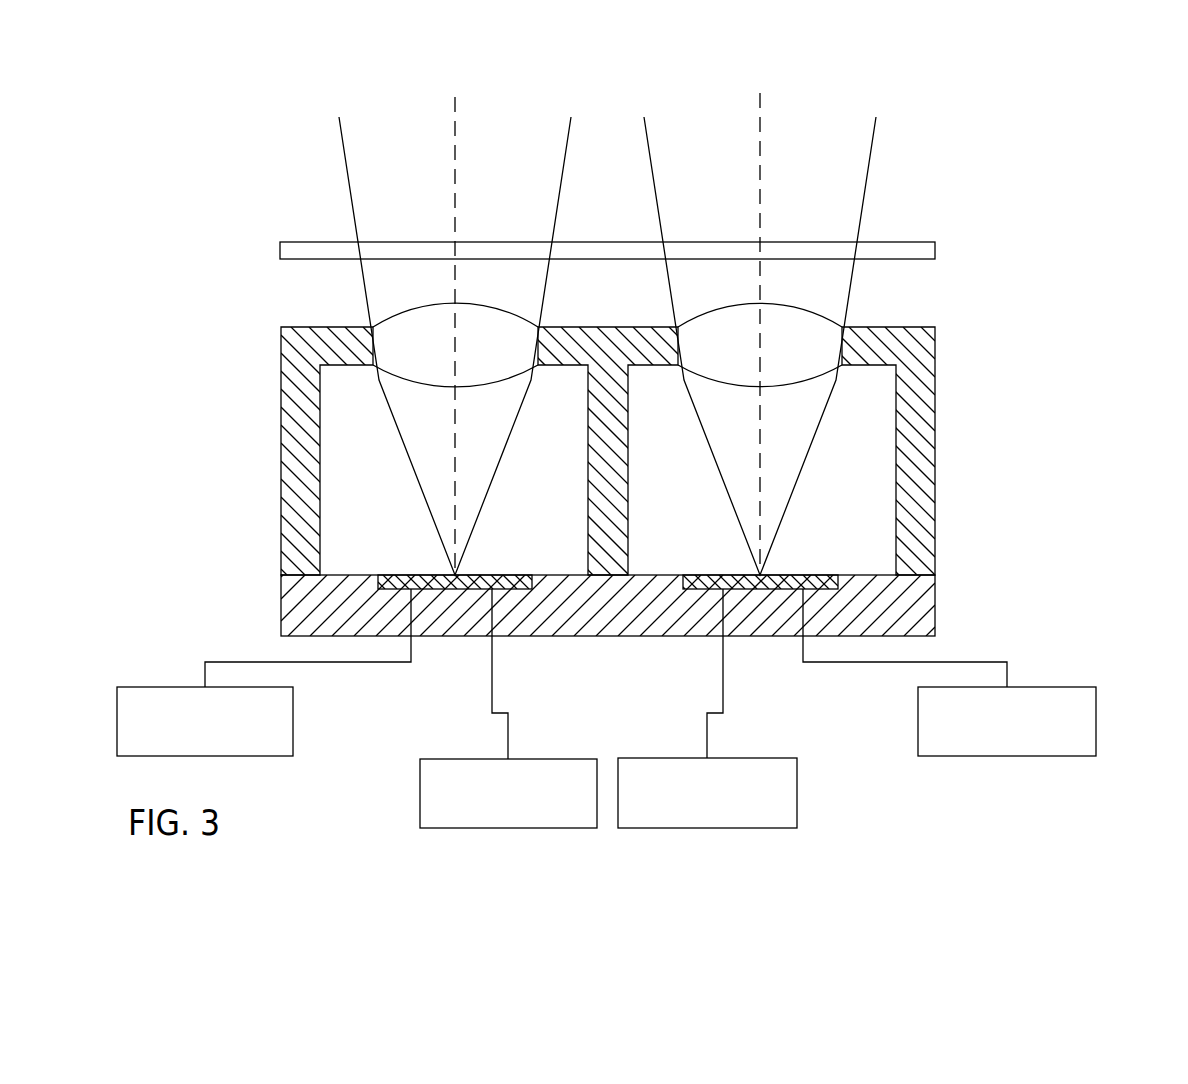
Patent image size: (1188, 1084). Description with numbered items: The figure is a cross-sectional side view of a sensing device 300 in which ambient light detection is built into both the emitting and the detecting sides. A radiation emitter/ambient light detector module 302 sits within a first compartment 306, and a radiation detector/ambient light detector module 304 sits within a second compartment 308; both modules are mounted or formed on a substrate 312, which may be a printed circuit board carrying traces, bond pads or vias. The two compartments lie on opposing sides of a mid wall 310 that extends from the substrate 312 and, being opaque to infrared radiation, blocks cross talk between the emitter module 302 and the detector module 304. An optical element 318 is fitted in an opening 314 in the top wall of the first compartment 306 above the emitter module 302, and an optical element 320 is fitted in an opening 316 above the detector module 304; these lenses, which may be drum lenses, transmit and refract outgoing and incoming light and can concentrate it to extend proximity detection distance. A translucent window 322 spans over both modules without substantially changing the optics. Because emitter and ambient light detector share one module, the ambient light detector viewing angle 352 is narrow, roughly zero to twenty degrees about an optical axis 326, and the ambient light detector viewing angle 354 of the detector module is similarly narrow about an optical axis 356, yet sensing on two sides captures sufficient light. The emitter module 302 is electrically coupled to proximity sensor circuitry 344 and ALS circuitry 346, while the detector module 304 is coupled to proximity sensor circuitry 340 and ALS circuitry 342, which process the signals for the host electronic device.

The sensing device 300 is at (963, 122).
The radiation emitter/ambient light detector module 302 is at (752, 589).
The radiation detector/ambient light detector module 304 is at (457, 589).
The first compartment 306 is at (937, 492).
The second compartment 308 is at (279, 488).
The mid wall 310 is at (588, 527).
The substrate 312 is at (935, 603).
The opening 314 is at (813, 384).
The opening 316 is at (403, 387).
The optical element 318 is at (887, 360).
The optical element 320 is at (320, 355).
The window 322 is at (898, 242).
The optical axis 326 is at (760, 129).
The proximity sensor circuitry 340 is at (117, 713).
The ALS circuitry 342 is at (420, 801).
The proximity sensor circuitry 344 is at (1096, 720).
The ALS circuitry 346 is at (797, 803).
The ambient light detector viewing angle 352 is at (863, 207).
The ambient light detector viewing angle 354 is at (351, 191).
The optical axis 356 is at (455, 137).